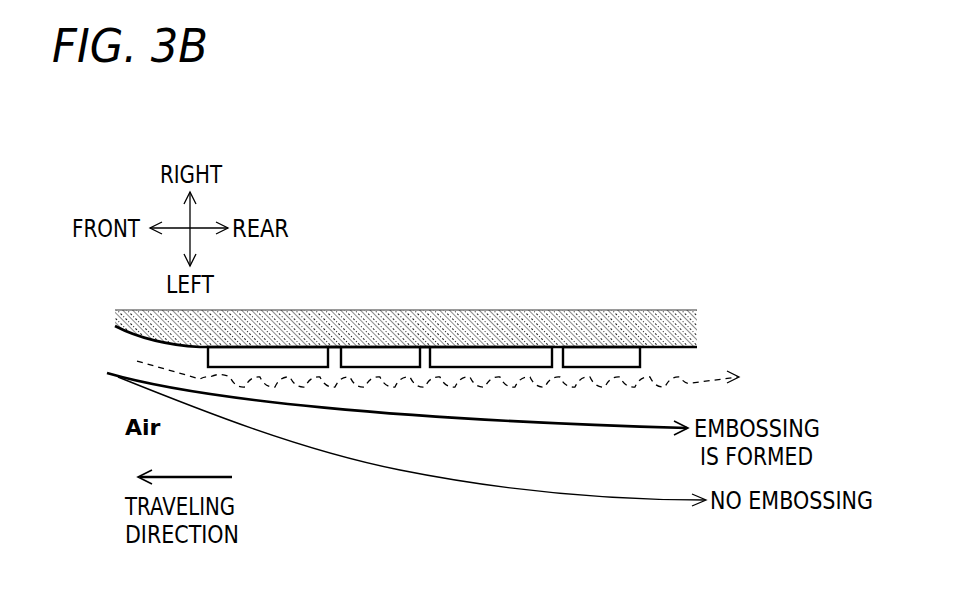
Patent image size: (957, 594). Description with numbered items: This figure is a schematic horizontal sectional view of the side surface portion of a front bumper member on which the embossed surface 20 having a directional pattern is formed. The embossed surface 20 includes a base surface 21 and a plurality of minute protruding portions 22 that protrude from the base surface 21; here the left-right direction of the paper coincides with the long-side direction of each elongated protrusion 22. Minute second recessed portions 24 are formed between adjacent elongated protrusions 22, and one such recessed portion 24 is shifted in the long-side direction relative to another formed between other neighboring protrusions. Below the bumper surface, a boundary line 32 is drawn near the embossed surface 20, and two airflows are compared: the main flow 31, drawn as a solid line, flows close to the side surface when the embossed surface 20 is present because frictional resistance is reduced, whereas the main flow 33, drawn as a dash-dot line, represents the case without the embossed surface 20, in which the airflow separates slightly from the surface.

The embossed surface 20 is at (406, 268).
The base surface 21 is at (667, 347).
The protruding portions 22 is at (290, 347).
The second recessed portions 24 is at (334, 347).
The main flow 31 is at (590, 430).
The embossed medium surface 32 is at (687, 383).
The main flow 33 is at (540, 495).